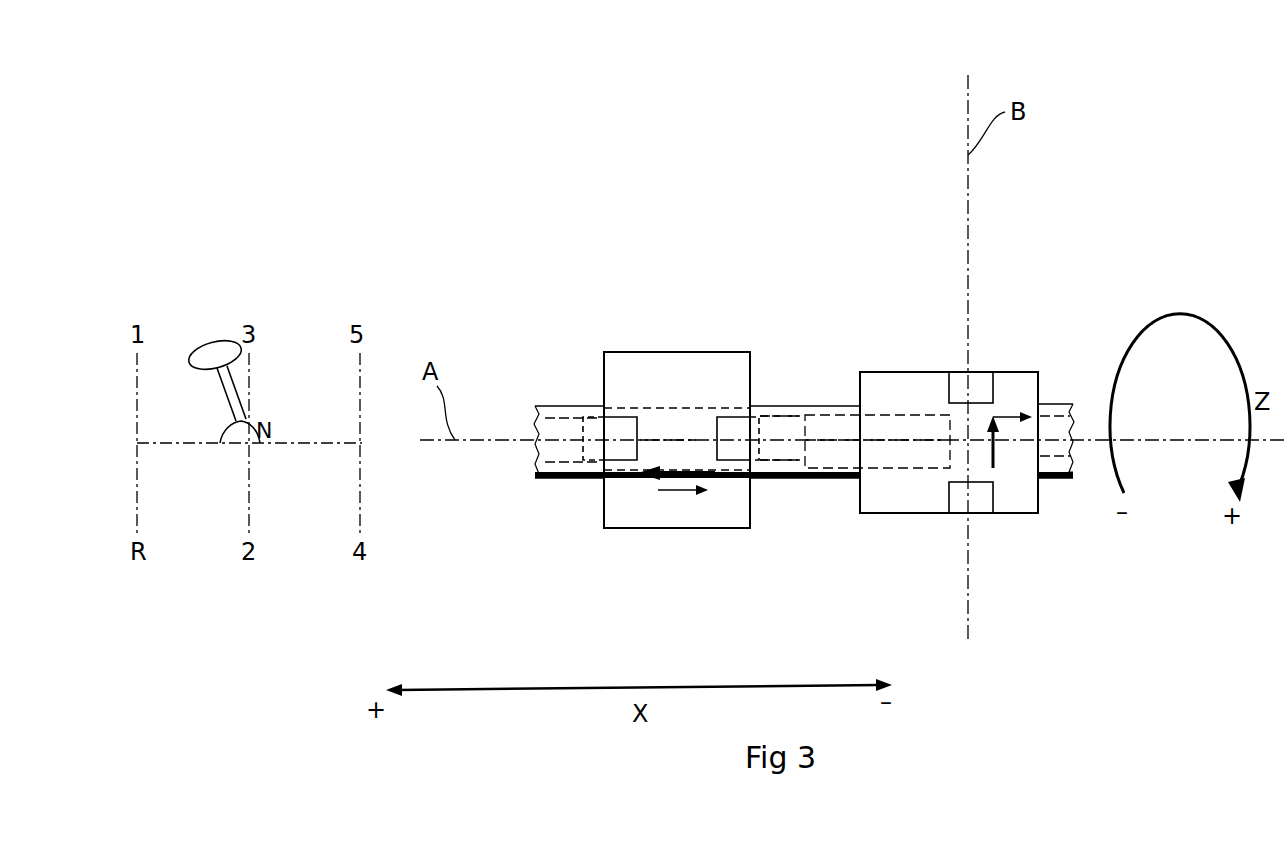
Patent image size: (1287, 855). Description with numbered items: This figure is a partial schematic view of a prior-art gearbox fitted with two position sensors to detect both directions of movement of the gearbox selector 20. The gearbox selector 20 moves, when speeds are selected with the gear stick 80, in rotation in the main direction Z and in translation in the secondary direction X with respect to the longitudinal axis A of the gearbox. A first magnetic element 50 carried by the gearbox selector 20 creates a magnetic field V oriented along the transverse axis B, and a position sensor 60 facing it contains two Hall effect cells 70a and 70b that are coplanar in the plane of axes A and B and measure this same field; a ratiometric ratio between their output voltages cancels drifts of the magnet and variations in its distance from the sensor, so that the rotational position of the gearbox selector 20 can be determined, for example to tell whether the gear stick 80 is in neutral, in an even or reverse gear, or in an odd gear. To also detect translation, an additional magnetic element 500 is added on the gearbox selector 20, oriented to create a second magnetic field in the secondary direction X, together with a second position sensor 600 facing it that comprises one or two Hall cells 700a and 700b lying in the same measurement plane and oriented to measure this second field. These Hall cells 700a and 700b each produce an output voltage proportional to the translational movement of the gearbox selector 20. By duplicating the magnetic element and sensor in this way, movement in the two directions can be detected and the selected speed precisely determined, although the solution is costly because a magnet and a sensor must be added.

The gearbox selector 20 is at (1062, 410).
The magnetic element 50 is at (832, 462).
The position sensor 60 is at (898, 372).
The Hall effect cell 70a is at (958, 385).
The Hall effect cell 70b is at (985, 505).
The gear stick 80 is at (222, 350).
The additional magnetic element 500 is at (693, 438).
The position sensor 600 is at (640, 362).
The Hall cell 700a is at (612, 430).
The Hall cell 700b is at (722, 418).